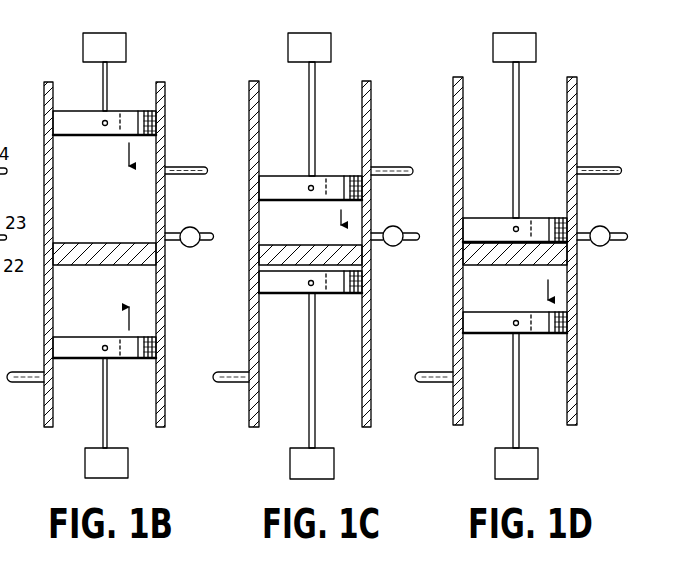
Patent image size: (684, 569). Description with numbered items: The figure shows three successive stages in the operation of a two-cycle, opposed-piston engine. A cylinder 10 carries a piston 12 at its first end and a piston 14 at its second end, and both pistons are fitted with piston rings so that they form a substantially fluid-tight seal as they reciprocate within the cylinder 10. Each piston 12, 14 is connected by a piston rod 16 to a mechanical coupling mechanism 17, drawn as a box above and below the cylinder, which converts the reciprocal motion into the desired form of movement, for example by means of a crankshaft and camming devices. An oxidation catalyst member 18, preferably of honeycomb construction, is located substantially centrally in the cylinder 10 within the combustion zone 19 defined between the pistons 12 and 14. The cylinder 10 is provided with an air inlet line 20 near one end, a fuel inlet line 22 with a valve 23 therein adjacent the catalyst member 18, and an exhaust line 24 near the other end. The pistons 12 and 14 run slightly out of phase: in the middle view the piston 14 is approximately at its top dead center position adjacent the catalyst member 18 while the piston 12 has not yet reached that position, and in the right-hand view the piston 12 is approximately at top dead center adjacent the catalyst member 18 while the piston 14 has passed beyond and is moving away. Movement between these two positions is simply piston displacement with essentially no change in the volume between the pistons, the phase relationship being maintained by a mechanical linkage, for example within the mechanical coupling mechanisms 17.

In FIG. 1B, the cylinder 10 is at (44, 137).
In FIG. 1C, the cylinder 10 is at (249, 137).
In FIG. 1D, the cylinder 10 is at (453, 137).
In FIG. 1B, the piston 12 is at (157, 121).
In FIG. 1C, the piston 12 is at (347, 193).
In FIG. 1D, the piston 12 is at (575, 222).
In FIG. 1B, the piston 14 is at (157, 348).
In FIG. 1C, the piston 14 is at (362, 283).
In FIG. 1D, the piston 14 is at (577, 319).
In FIG. 1B, the piston rod 16 is at (107, 78).
In FIG. 1C, the piston rod 16 is at (316, 80).
In FIG. 1D, the piston rod 16 is at (519, 82).
In FIG. 1B, the mechanical coupling mechanism 17 is at (126, 41).
In FIG. 1C, the mechanical coupling mechanism 17 is at (331, 43).
In FIG. 1D, the mechanical coupling mechanism 17 is at (536, 43).
In FIG. 1B, the oxidation catalyst member 18 is at (117, 250).
In FIG. 1C, the oxidation catalyst member 18 is at (285, 252).
In FIG. 1D, the oxidation catalyst member 18 is at (507, 257).
In FIG. 1C, the combustion zone 19 is at (316, 233).
In FIG. 1B, the air inlet line 20 is at (25, 375).
In FIG. 1C, the air inlet line 20 is at (225, 375).
In FIG. 1D, the air inlet line 20 is at (423, 375).
In FIG. 1B, the fuel inlet line 22 is at (208, 243).
In FIG. 1C, the fuel inlet line 22 is at (414, 243).
In FIG. 1D, the fuel inlet line 22 is at (622, 243).
In FIG. 1B, the valve 23 is at (200, 230).
In FIG. 1C, the valve 23 is at (405, 230).
In FIG. 1D, the valve 23 is at (612, 230).
In FIG. 1B, the exhaust line 24 is at (190, 167).
In FIG. 1C, the exhaust line 24 is at (395, 167).
In FIG. 1D, the exhaust line 24 is at (607, 167).